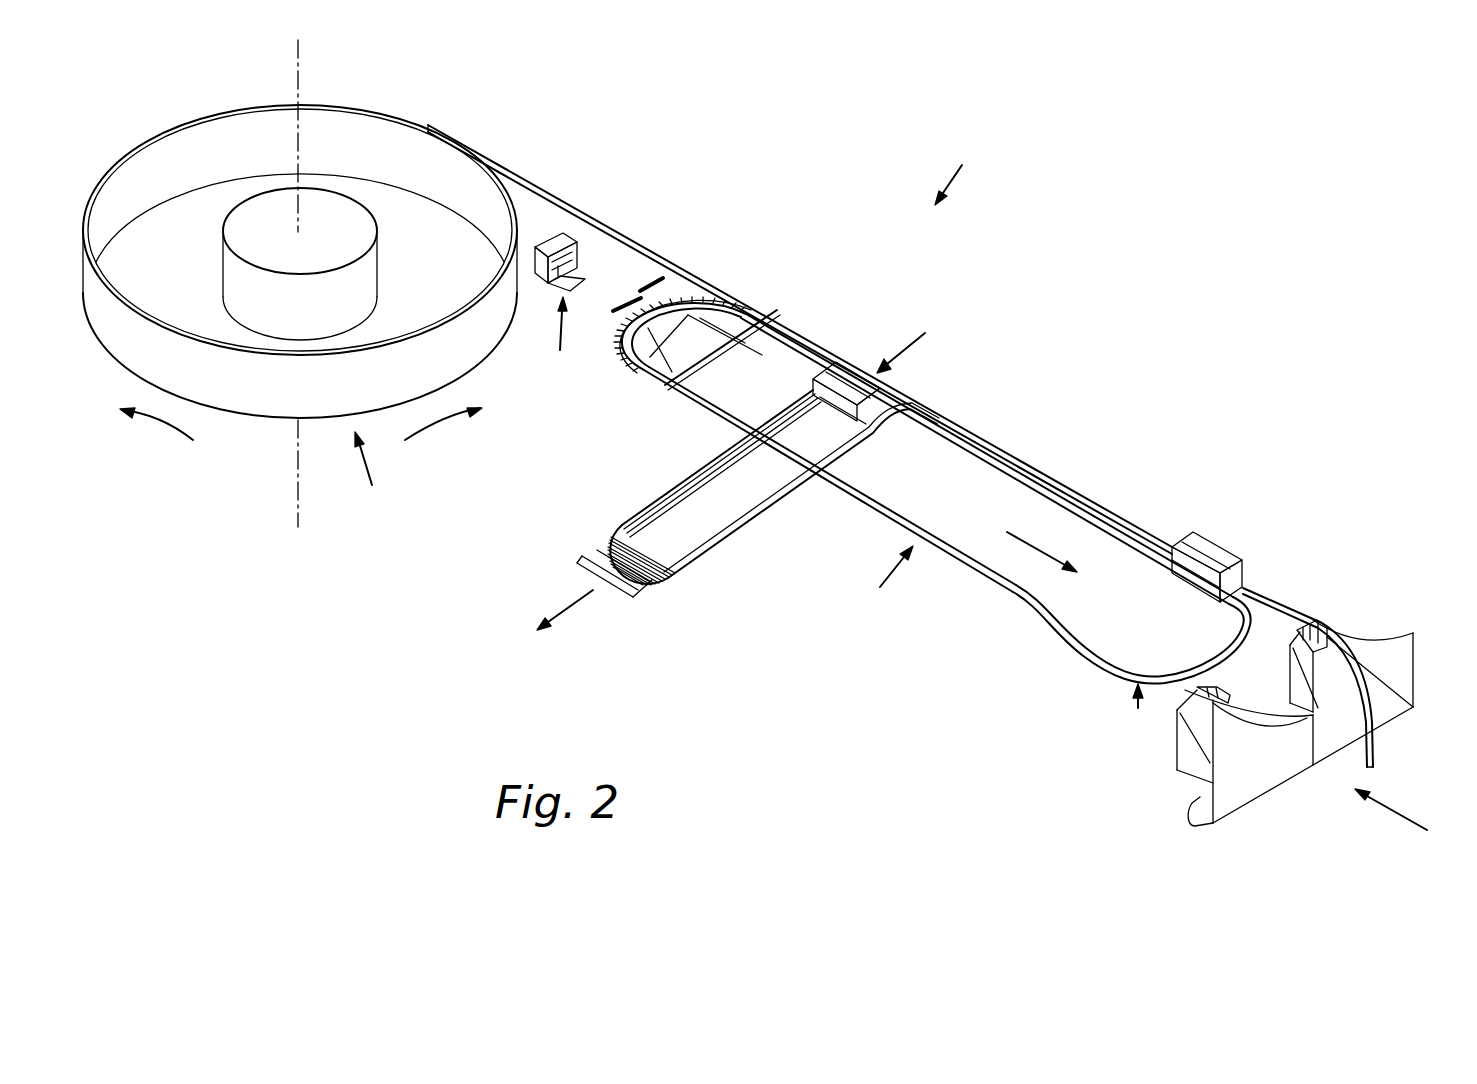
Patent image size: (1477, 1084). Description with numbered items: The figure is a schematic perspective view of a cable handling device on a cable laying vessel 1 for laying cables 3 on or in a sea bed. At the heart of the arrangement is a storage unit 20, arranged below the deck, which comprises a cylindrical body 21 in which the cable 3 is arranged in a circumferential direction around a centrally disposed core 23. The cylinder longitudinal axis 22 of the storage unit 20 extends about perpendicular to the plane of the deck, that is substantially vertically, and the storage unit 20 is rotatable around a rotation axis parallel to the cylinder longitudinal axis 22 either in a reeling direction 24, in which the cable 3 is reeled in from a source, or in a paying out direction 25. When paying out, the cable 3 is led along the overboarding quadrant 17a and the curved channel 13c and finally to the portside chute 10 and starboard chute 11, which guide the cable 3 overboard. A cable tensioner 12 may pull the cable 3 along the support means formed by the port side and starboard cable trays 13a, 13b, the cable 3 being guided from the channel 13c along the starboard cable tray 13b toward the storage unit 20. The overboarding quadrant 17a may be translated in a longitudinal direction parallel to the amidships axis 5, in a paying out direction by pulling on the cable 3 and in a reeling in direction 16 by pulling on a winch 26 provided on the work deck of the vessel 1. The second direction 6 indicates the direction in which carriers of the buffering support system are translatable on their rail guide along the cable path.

The vessel 1 is at (960, 172).
The cable 3 is at (618, 238).
The amidships axis 5 is at (1047, 550).
The second direction 6 is at (580, 607).
The portside chute 10 is at (1253, 763).
The starboard chute 11 is at (1387, 707).
The cable tensioner 12 is at (1210, 550).
The port side cable tray 13a is at (830, 494).
The starboard cable tray 13b is at (927, 453).
The curved channel 13c is at (1132, 675).
The reeling in direction 16 is at (1397, 817).
The overboarding quadrant 17a is at (718, 302).
The storage unit 20 is at (371, 475).
The cylindrical body 21 is at (261, 388).
The cylinder longitudinal axis 22 is at (298, 46).
The core 23 is at (240, 283).
The reeling direction 24 is at (438, 440).
The paying out direction 25 is at (162, 440).
The winch 26 is at (560, 307).